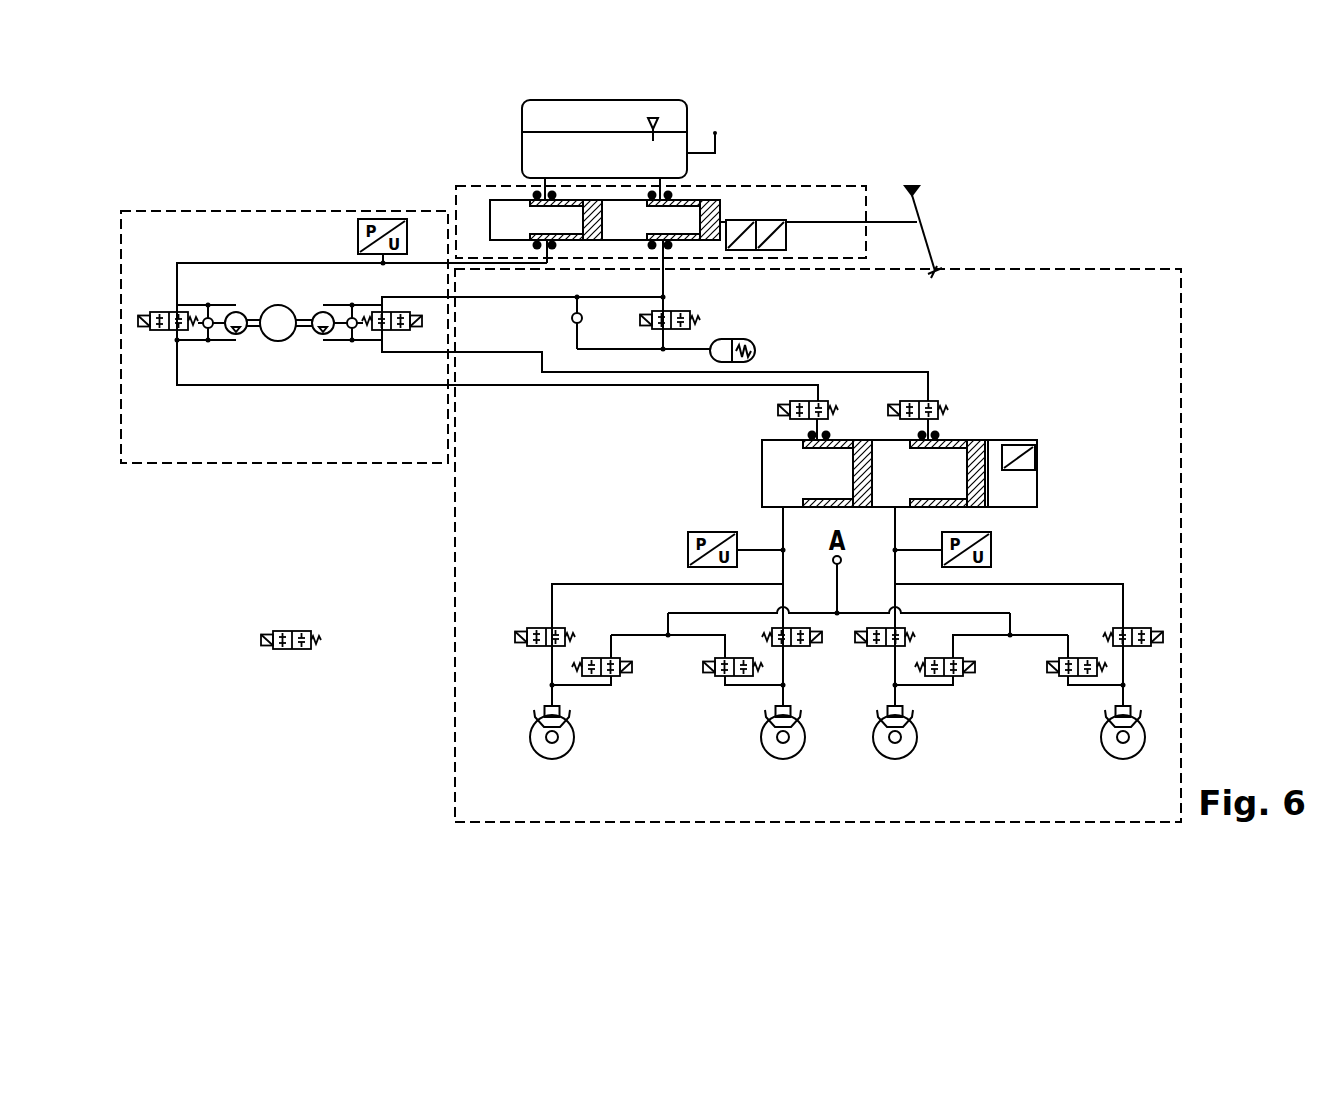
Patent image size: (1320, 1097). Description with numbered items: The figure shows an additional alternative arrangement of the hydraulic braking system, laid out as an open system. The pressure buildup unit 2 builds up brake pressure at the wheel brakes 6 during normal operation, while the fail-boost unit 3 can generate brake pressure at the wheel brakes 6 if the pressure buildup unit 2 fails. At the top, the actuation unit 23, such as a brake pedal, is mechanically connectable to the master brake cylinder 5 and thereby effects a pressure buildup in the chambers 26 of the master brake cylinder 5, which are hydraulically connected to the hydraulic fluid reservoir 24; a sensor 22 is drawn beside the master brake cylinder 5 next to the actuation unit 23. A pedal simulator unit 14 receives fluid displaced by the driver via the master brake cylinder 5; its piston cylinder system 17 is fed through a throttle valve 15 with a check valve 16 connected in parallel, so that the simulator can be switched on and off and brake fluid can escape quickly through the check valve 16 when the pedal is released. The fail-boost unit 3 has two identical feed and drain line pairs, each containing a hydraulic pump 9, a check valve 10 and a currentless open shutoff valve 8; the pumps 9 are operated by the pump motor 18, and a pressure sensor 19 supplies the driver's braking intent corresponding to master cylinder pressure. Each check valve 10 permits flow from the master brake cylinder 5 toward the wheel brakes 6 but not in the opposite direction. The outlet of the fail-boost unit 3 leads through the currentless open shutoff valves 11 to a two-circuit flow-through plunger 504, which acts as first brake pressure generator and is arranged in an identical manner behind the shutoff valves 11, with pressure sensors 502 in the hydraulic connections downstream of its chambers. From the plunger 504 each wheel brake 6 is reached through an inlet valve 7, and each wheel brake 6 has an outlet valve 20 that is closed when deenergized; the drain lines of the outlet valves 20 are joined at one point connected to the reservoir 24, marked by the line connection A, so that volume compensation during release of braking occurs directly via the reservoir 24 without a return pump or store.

The pressure buildup unit 2 is at (412, 756).
The fail-boost unit 3 is at (203, 472).
The master brake cylinder 5 is at (466, 139).
The wheel brakes 6 is at (552, 759).
The inlet valve 7 is at (522, 646).
The shutoff valve 8 is at (138, 322).
The hydraulic pump 9 is at (242, 334).
The check valve 10 is at (208, 304).
The shutoff valves 11 is at (778, 409).
The pedal simulator unit 14 is at (802, 351).
The throttle valve 15 is at (686, 311).
The check valve 16 is at (572, 318).
The piston cylinder system 17 is at (740, 339).
The pump motor 18 is at (270, 306).
The pressure sensor 19 is at (358, 240).
The outlet valve 20 is at (632, 671).
The travel sensor 22 is at (770, 221).
The actuation unit 23 is at (912, 185).
The hydraulic fluid reservoir 24 is at (618, 100).
The chambers 26 is at (513, 208).
The pressure sensors 502 is at (688, 549).
The two-circuit plunger 504 is at (993, 440).